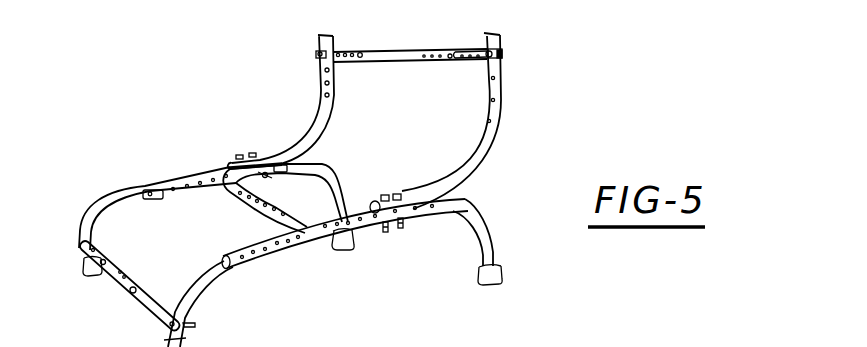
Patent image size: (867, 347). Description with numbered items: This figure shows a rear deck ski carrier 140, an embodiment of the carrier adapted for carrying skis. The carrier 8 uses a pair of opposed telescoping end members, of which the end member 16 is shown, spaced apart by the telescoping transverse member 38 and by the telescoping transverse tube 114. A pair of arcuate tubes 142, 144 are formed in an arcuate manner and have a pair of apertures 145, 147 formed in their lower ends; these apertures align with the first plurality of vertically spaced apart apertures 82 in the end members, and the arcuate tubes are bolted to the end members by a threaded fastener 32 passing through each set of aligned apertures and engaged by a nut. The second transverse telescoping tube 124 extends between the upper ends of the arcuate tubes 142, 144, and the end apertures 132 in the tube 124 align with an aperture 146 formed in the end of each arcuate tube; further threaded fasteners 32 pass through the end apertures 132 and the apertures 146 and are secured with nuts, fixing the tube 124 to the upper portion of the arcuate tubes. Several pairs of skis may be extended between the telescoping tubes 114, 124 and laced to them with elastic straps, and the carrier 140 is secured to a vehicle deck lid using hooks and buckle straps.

The chair frame 8 is at (323, 162).
The telescoping end member 16 is at (496, 238).
The threaded fastener 32 is at (318, 54).
The telescoping transverse member 38 is at (233, 213).
The first plurality of vertical spaced apart apertures 82 is at (350, 226).
The telescoping transverse tube 114 is at (127, 308).
The second transverse telescoping tube 124 is at (410, 41).
The end aperture 132 is at (504, 56).
The rear deck ski carrier 140 is at (276, 101).
The arcuate tube 142 is at (493, 130).
The arcuate tube 144 is at (323, 118).
The aperture 145 is at (403, 192).
The aperture 146 is at (340, 48).
The aperture 147 is at (381, 194).